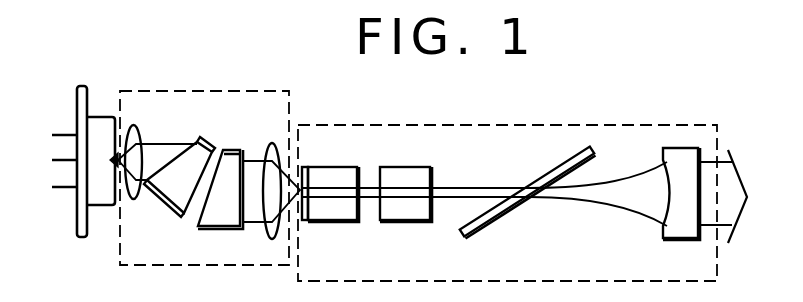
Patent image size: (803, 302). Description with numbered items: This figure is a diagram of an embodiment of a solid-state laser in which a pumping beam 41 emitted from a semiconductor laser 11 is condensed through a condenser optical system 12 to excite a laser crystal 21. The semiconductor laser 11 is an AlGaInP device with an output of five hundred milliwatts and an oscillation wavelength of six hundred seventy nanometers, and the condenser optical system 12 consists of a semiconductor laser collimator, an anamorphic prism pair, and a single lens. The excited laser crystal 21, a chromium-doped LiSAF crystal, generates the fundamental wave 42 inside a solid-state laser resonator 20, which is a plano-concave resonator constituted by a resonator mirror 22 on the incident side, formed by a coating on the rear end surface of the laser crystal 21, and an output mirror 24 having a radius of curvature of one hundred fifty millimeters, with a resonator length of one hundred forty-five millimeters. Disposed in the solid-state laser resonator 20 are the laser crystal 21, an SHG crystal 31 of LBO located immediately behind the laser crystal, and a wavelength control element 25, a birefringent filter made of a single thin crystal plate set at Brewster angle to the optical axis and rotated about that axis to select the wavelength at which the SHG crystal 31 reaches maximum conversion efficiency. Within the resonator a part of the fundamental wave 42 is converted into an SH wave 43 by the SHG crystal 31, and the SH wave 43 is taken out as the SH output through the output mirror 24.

The semiconductor laser 11 is at (77, 103).
The condenser optical system 12 is at (165, 91).
The pumping beam 41 is at (252, 212).
The solid-state laser resonator 20 is at (548, 124).
The laser crystal 21 is at (323, 166).
The resonator mirror 22 is at (308, 220).
The SHG crystal 31 is at (407, 166).
The wavelength control element 25 is at (516, 208).
The fundamental wave 42 is at (641, 186).
The output mirror 24 is at (677, 241).
The SH wave 43 is at (742, 172).